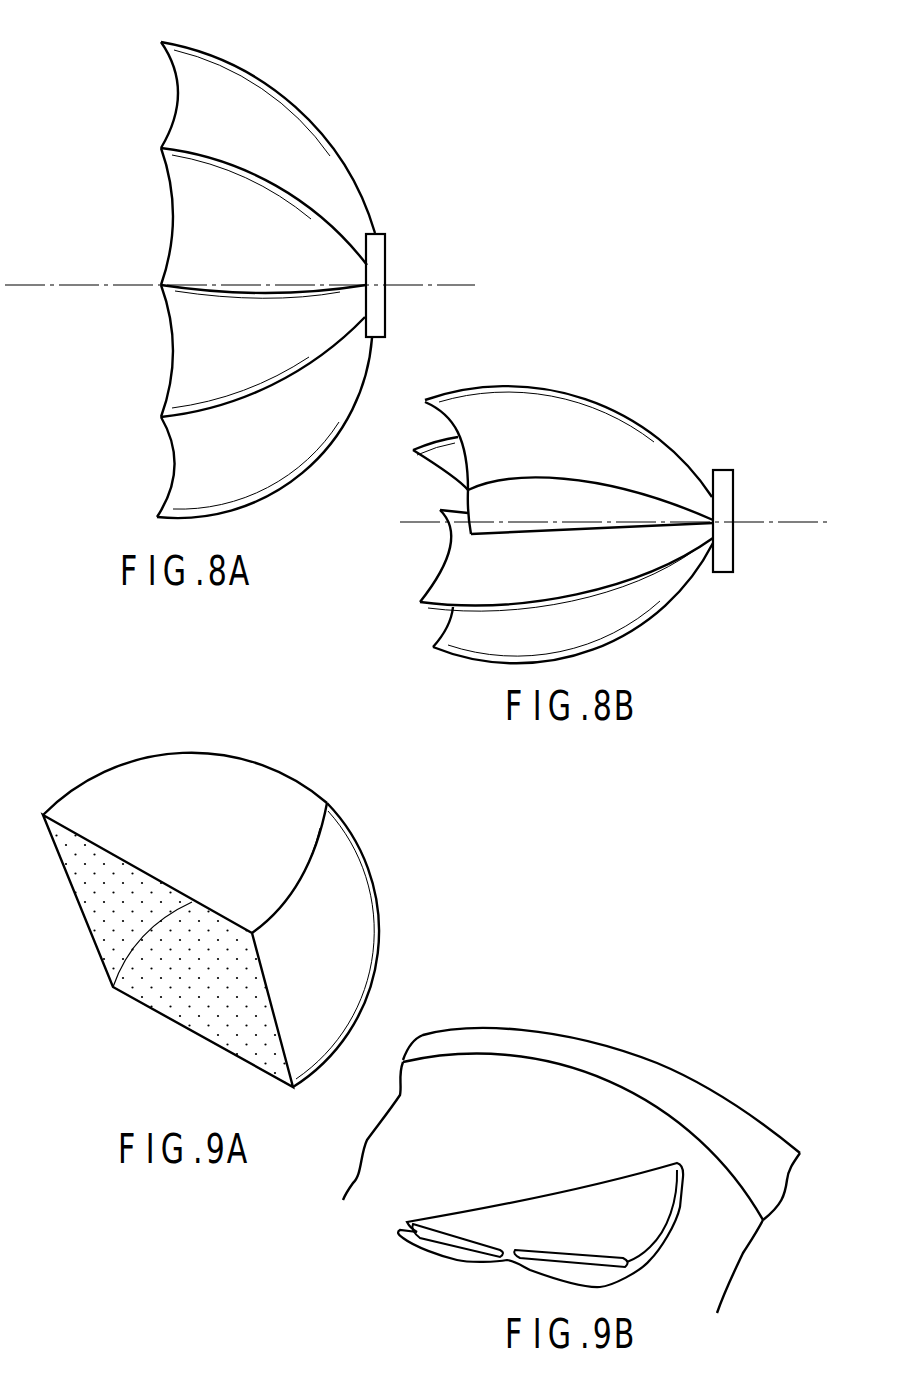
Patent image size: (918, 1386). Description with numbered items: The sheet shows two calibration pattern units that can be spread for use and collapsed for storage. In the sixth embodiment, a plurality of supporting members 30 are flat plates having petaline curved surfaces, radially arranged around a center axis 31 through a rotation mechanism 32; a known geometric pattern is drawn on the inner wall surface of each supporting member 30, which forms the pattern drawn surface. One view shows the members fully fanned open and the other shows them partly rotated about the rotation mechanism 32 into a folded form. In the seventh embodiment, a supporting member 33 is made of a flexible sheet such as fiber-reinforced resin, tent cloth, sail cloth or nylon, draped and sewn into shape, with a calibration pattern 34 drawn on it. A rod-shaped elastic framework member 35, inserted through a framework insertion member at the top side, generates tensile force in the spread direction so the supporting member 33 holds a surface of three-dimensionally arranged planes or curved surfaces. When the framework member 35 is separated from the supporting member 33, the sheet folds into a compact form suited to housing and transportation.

In FIG. 8A, the supporting member 30 is at (338, 150).
In FIG. 8B, the supporting member 30 is at (653, 442).
In FIG. 8A, the center axis 31 is at (103, 285).
In FIG. 8B, the center axis 31 is at (430, 523).
In FIG. 8A, the rotation mechanism 32 is at (380, 233).
In FIG. 8B, the rotation mechanism 32 is at (723, 470).
In FIG. 9A, the supporting member 33 is at (125, 850).
In FIG. 9B, the supporting member 33 is at (472, 1217).
In FIG. 9A, the calibration pattern 34 is at (200, 1013).
In FIG. 9A, the framework member 35 is at (205, 750).
In FIG. 9B, the framework member 35 is at (707, 1140).